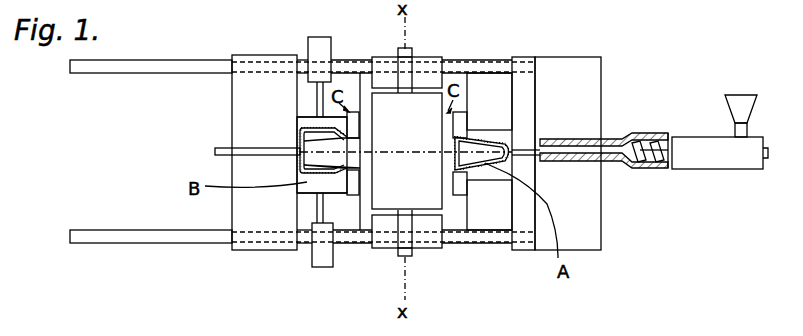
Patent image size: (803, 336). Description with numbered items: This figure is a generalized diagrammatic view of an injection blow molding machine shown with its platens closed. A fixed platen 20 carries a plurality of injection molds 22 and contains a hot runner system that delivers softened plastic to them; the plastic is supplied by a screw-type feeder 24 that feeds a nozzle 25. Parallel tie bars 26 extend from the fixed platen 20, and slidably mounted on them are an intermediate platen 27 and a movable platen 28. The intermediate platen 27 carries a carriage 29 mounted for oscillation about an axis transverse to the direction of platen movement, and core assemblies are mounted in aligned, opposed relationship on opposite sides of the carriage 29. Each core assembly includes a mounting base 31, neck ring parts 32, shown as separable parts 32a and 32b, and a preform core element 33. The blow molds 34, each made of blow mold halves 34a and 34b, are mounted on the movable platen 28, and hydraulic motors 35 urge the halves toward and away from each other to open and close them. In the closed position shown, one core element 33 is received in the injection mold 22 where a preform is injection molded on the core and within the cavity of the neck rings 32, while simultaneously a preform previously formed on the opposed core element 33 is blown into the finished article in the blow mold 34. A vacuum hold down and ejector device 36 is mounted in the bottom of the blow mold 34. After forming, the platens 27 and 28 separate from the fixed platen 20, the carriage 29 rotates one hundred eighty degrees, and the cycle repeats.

The fixed platen 20 is at (522, 96).
The injection mold 22 is at (488, 128).
The screw-type feeder 24 is at (700, 137).
The nozzle 25 is at (578, 137).
The tie bars 26 is at (133, 74).
The intermediate platen 27 is at (422, 55).
The movable platen 28 is at (238, 85).
The carriage 29 is at (398, 197).
The mounting base 31 is at (456, 196).
The neck ring parts 32 is at (354, 197).
The neck ring part 32a is at (353, 108).
The neck ring part 32b is at (357, 200).
The preform core element 33 is at (340, 142).
The blow mold 34 is at (293, 120).
The blow mold half 34a is at (308, 116).
The blow mold half 34b is at (307, 185).
The hydraulic motors 35 is at (312, 45).
The vacuum hold down and ejector device 36 is at (303, 165).